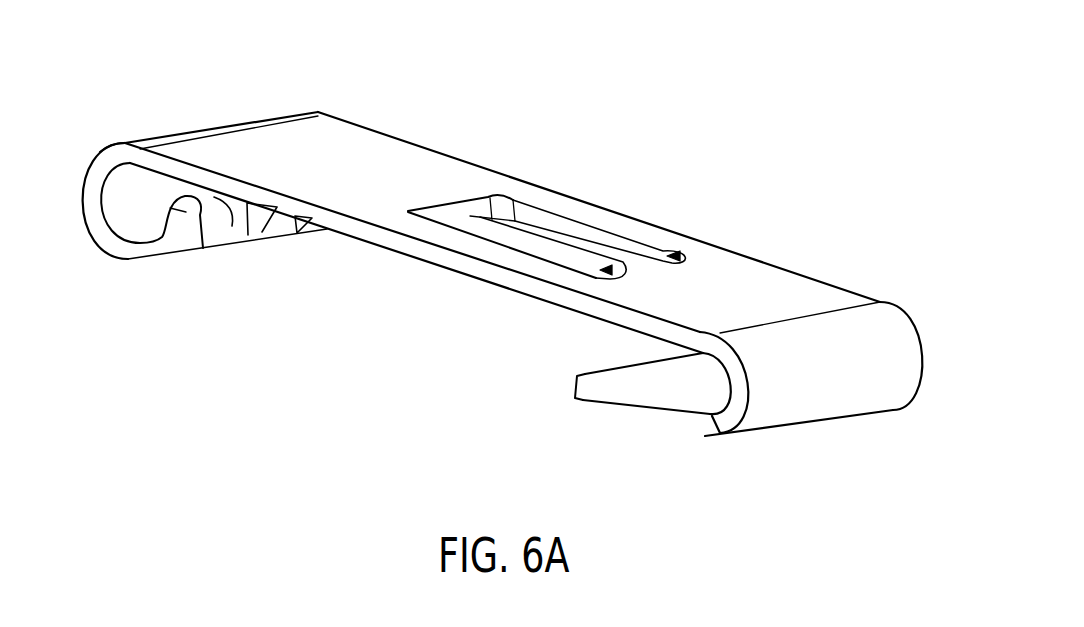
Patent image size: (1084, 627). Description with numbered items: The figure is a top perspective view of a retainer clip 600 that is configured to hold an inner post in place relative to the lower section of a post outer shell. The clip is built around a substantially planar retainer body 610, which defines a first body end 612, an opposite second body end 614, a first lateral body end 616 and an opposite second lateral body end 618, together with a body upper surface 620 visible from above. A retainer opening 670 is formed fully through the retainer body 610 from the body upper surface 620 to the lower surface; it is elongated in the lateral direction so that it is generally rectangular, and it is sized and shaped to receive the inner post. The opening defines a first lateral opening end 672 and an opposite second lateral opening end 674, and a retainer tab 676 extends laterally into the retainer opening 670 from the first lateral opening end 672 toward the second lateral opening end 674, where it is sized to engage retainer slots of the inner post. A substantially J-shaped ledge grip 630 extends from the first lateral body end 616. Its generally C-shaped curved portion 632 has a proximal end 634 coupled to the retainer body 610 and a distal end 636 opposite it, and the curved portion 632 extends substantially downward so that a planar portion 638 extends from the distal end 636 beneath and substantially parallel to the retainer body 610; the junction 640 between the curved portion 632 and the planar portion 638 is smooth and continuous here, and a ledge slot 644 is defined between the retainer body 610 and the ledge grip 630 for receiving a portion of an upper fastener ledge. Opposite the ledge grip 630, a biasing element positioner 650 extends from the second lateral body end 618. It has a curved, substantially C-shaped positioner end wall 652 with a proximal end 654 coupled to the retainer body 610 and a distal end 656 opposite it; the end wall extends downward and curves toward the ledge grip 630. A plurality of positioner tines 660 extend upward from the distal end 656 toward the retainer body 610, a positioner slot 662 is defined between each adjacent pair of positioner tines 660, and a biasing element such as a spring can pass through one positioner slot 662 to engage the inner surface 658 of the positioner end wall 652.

The retainer clip 600 is at (777, 85).
The retainer body 610 is at (387, 153).
The first body end 612 is at (368, 233).
The second body end 614 is at (770, 263).
The first lateral body end 616 is at (822, 308).
The second lateral body end 618 is at (238, 140).
The body upper surface 620 is at (333, 148).
The ledge grip 630 is at (872, 435).
The curved portion 632 is at (899, 367).
The proximal end 634 is at (871, 318).
The distal end 636 is at (714, 429).
The planar portion 638 is at (657, 391).
The junction 640 is at (692, 418).
The ledge slot 644 is at (643, 365).
The biasing element positioner 650 is at (96, 104).
The positioner end wall 652 is at (90, 202).
The proximal end 654 is at (122, 143).
The distal end 656 is at (140, 252).
The inner surface 658 is at (123, 212).
The positioner tines 660 is at (207, 200).
The positioner slot 662 is at (228, 241).
The retainer opening 670 is at (531, 228).
The first lateral opening end 672 is at (671, 257).
The second lateral opening end 674 is at (458, 197).
The retainer tab 676 is at (621, 262).